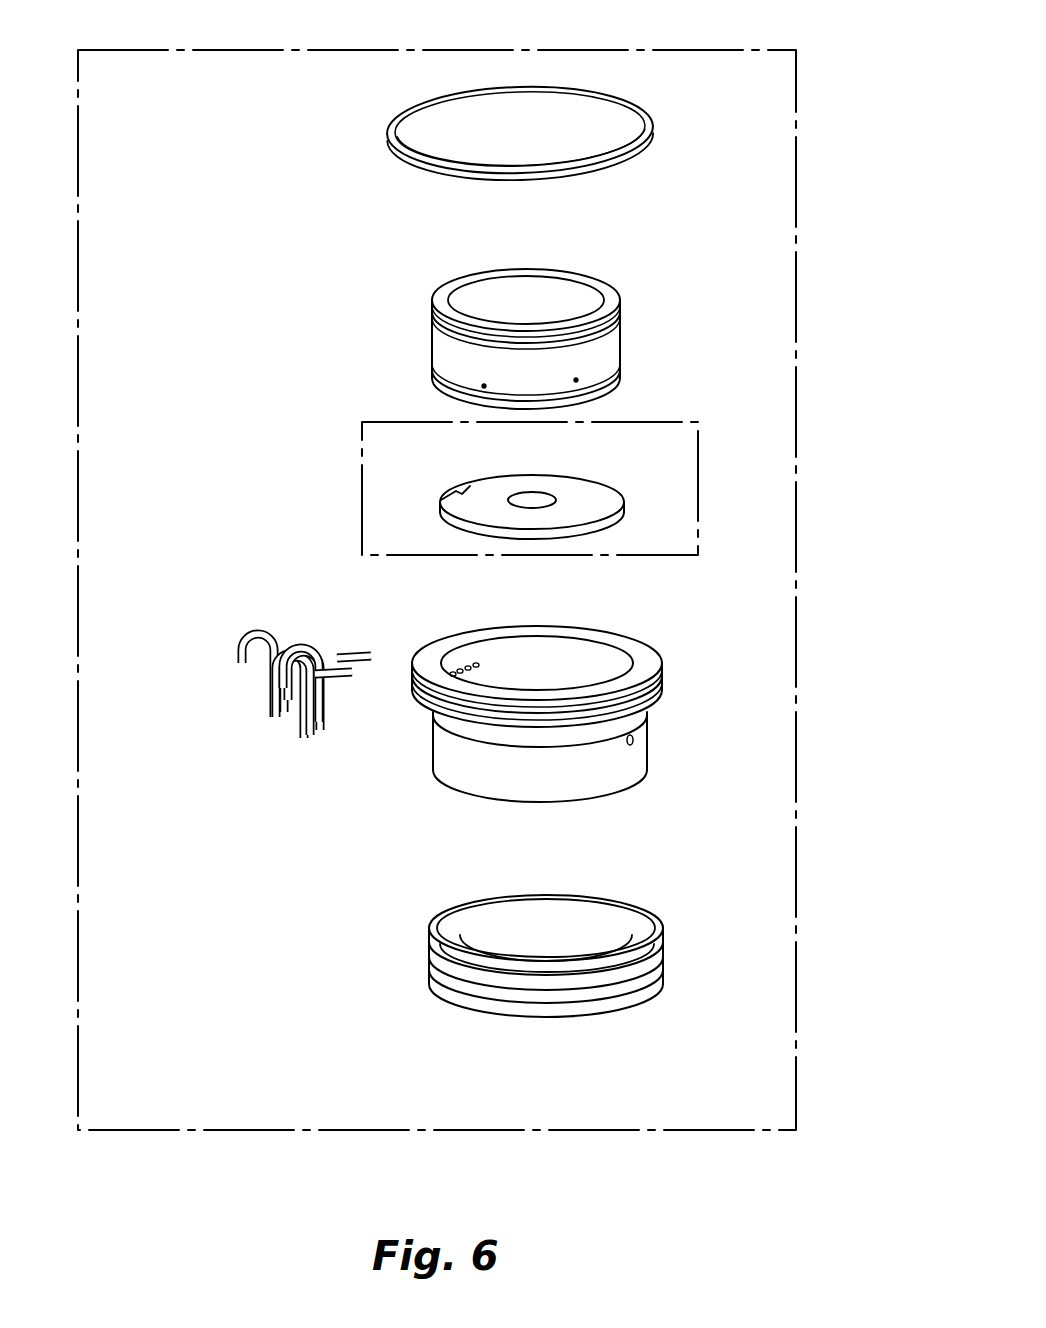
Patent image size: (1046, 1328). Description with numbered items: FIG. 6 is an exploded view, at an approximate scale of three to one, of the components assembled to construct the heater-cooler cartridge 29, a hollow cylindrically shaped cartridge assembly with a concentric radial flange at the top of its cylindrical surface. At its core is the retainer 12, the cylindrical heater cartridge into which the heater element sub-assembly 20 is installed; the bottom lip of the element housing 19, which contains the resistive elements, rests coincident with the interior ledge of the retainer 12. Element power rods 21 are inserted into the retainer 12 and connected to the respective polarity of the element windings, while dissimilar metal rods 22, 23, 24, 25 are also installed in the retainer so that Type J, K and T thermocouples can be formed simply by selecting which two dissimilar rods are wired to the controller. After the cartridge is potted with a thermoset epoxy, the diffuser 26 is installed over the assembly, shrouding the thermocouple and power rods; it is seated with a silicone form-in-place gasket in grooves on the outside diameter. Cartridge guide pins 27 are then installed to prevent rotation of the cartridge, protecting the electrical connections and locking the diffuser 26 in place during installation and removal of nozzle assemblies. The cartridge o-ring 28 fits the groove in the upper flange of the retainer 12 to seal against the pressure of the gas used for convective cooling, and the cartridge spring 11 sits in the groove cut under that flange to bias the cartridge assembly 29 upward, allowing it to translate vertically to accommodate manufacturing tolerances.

The cartridge spring 11 is at (457, 993).
The retainer 12 is at (647, 777).
The element housing 19 is at (617, 489).
The heater element sub-assembly 20 is at (567, 488).
The element power rods 21 is at (267, 640).
The dissimilar metal rod 22 is at (298, 738).
The dissimilar metal rod 23 is at (312, 737).
The dissimilar metal rod 24 is at (317, 737).
The dissimilar metal rod 25 is at (320, 715).
The diffuser 26 is at (433, 330).
The cartridge guide pins 27 is at (347, 658).
The cartridge o-ring 28 is at (637, 147).
The heater-cooler cartridge 29 is at (437, 565).